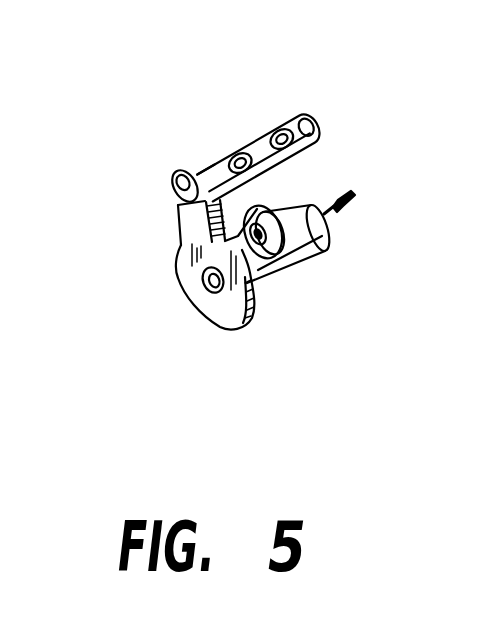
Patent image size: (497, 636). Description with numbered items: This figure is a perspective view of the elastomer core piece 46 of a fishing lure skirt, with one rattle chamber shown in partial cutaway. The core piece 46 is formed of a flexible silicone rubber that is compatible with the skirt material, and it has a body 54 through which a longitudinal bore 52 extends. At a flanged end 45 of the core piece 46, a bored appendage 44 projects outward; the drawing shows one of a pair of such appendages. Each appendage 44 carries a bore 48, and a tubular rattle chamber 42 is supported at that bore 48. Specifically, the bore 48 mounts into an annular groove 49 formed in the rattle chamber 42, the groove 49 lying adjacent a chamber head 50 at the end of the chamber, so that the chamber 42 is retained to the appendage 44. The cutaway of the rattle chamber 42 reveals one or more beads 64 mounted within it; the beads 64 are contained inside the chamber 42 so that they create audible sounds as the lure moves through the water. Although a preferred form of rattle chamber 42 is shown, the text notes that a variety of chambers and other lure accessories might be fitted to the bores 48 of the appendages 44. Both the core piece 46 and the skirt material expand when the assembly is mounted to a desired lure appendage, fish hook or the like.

The tubular rattle chamber 42 is at (311, 119).
The beads 64 is at (263, 128).
The annular groove 49 is at (190, 163).
The chamber head 50 is at (177, 197).
The bored appendage 44 is at (232, 241).
The flanged end 45 is at (240, 328).
The longitudinal bore 52 is at (207, 285).
The bore 48 is at (252, 248).
The body 54 is at (290, 263).
The elastomer core piece 46 is at (353, 193).